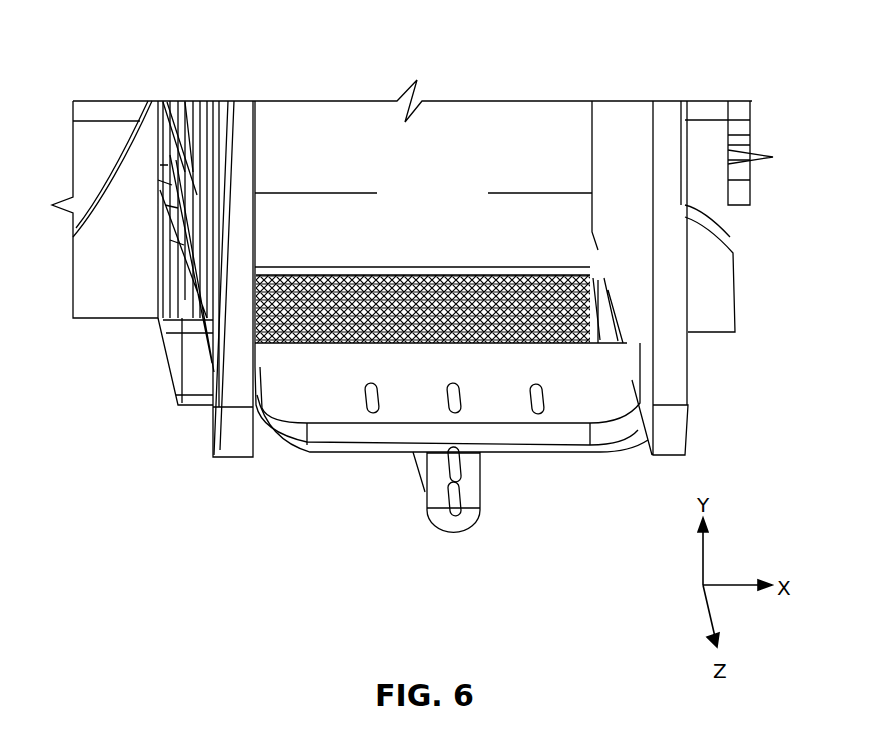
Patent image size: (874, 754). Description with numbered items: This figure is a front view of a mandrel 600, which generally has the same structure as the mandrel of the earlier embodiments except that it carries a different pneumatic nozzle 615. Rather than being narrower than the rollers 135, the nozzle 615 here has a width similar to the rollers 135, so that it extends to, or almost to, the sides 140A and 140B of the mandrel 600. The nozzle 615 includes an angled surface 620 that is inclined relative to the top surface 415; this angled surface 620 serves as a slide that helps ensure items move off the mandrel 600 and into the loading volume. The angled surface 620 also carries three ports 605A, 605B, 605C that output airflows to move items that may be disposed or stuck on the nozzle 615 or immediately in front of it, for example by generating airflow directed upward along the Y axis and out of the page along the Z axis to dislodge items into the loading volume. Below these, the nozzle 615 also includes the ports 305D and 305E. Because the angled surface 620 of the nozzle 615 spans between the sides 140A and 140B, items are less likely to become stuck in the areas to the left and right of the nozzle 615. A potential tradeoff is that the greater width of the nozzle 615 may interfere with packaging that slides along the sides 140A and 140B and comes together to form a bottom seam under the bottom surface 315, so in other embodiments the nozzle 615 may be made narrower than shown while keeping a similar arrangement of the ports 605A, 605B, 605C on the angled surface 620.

The mandrel 600 is at (660, 62).
The top surface 415 is at (333, 215).
The angled surface 620 is at (392, 350).
The rollers 135 is at (446, 292).
The side 140B is at (212, 440).
The side 140A is at (692, 433).
The pneumatic nozzle 615 is at (302, 450).
The port 605A is at (372, 413).
The port 605B is at (450, 383).
The port 605C is at (536, 385).
The bottom surface 315 is at (432, 527).
The port 305D is at (462, 462).
The port 305E is at (462, 500).